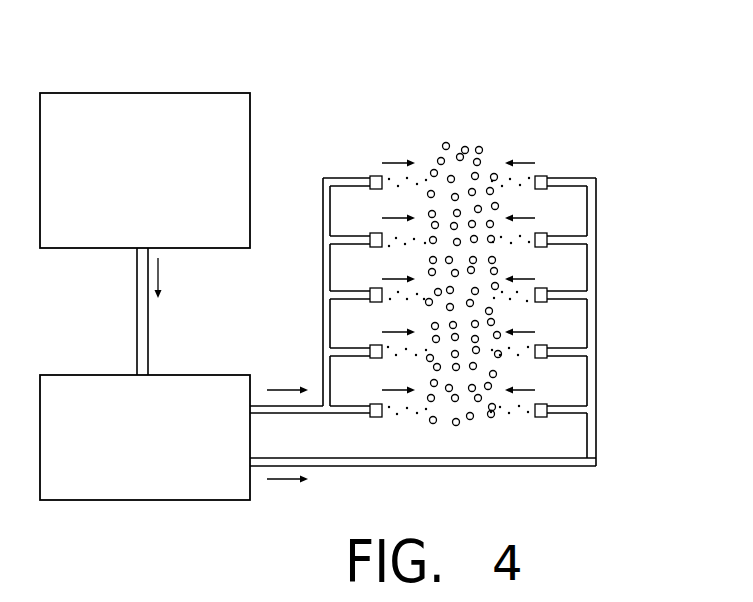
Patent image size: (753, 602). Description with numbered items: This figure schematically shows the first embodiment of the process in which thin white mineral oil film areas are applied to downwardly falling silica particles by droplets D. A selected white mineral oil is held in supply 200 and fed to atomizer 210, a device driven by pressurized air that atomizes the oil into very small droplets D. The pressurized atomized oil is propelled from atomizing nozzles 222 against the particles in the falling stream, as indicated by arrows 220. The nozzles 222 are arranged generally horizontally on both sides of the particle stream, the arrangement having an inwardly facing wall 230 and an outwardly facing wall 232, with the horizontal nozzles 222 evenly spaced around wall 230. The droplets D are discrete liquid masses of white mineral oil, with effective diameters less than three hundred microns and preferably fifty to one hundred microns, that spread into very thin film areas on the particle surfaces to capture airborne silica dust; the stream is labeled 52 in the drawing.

The white mineral oil supply 200 is at (102, 93).
The atomizer 210 is at (88, 500).
The arrows 220 is at (395, 163).
The atomizing nozzles 222 is at (370, 178).
The outwardly facing wall 232 is at (437, 310).
The inwardly facing wall 230 is at (487, 377).
The droplets D is at (422, 170).
The product being coated 52 is at (464, 133).